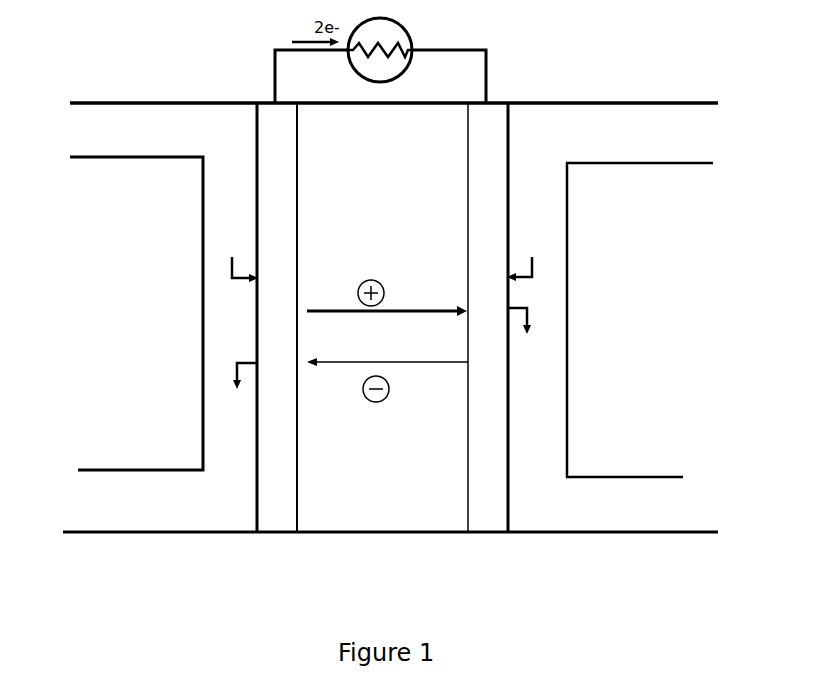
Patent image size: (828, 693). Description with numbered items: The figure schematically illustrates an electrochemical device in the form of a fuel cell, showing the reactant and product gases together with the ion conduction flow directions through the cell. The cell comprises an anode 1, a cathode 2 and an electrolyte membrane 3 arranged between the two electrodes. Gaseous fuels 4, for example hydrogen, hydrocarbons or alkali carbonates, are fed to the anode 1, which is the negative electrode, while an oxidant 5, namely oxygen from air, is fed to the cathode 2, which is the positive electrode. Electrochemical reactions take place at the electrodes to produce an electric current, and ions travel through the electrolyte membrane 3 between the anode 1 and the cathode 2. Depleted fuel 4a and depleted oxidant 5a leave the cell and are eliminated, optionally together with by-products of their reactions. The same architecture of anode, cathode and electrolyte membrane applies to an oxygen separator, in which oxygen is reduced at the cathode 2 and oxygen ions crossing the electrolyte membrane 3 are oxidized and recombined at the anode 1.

The anode 1 is at (278, 544).
The cathode 2 is at (489, 544).
The electrolyte membrane 3 is at (379, 542).
The gaseous fuels 4 is at (230, 162).
The depleted fuel 4a is at (240, 423).
The oxidant 5 is at (532, 160).
The depleted oxidant 5a is at (527, 423).